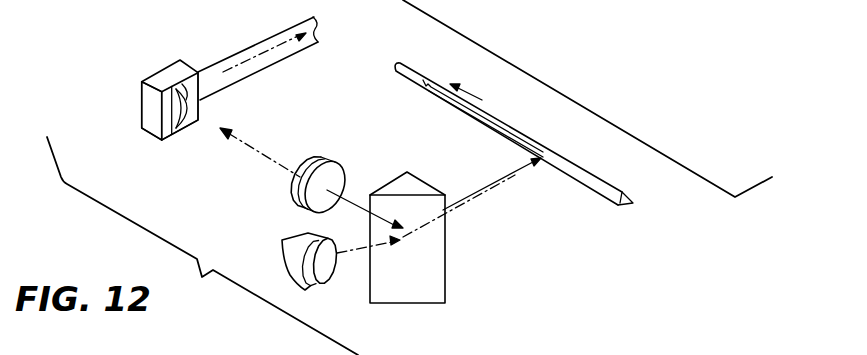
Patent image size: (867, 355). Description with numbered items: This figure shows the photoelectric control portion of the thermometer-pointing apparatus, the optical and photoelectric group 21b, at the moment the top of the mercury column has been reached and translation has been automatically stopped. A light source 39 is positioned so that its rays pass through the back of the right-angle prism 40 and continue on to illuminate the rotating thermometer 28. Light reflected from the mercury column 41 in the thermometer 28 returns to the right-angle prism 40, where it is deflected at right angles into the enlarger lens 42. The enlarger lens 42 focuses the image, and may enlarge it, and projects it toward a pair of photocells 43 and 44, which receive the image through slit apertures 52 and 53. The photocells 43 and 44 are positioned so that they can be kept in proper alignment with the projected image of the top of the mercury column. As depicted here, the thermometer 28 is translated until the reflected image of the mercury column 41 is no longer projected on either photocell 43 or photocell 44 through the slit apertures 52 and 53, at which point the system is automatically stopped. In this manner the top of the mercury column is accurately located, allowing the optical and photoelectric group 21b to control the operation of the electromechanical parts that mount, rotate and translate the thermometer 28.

The optical and photoelectric group 21b is at (158, 63).
The photocell 43 is at (157, 104).
The photocell 44 is at (197, 75).
The slit aperture 52 is at (177, 130).
The slit aperture 53 is at (188, 128).
The enlarger lens 42 is at (333, 168).
The light source 39 is at (313, 283).
The right-angle prism 40 is at (437, 258).
The thermometer 28 is at (580, 173).
The mercury column 41 is at (510, 132).